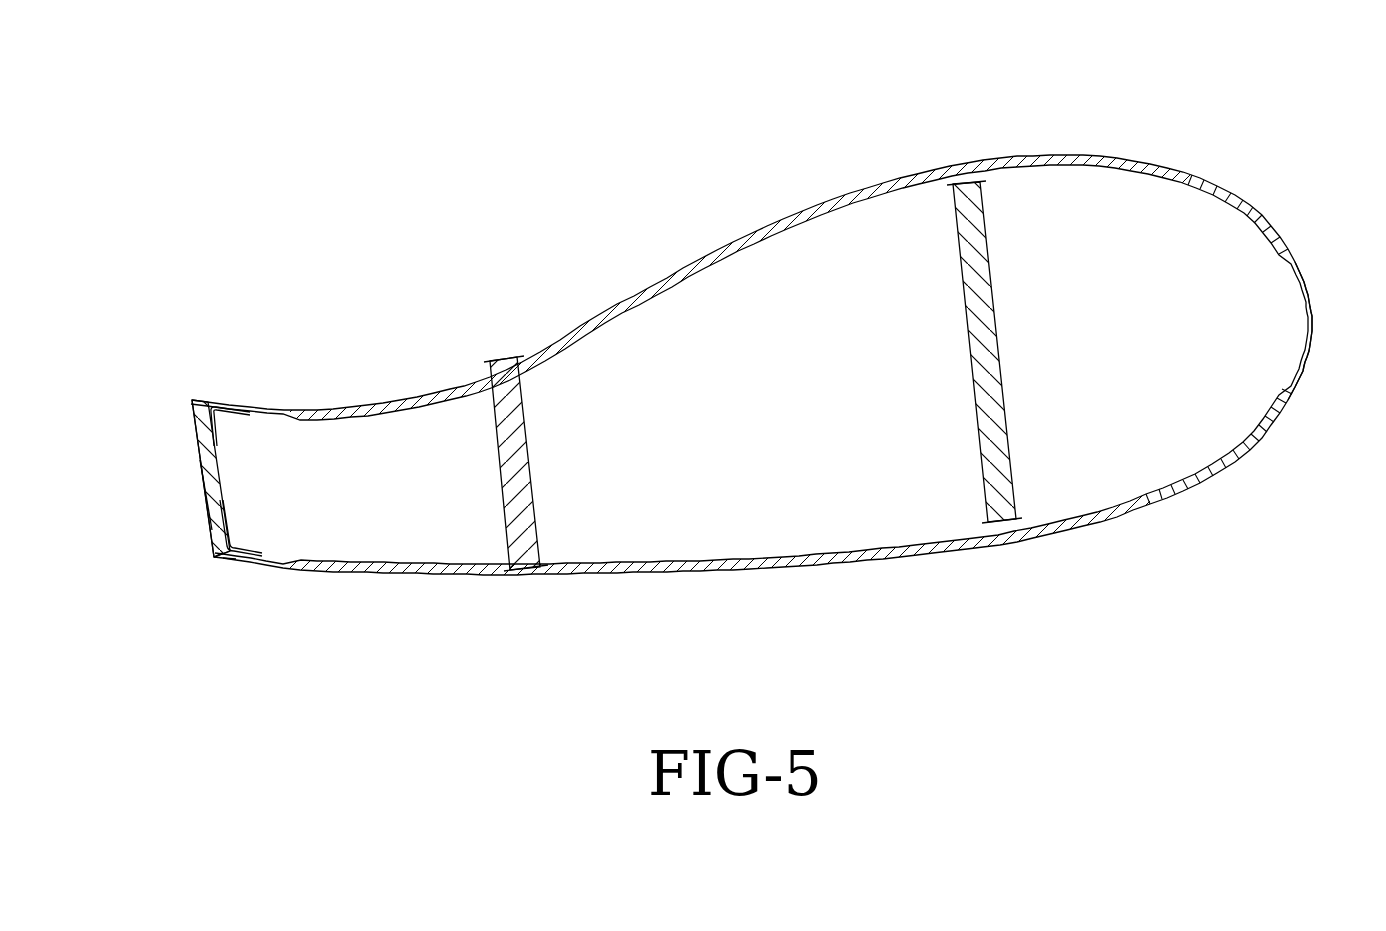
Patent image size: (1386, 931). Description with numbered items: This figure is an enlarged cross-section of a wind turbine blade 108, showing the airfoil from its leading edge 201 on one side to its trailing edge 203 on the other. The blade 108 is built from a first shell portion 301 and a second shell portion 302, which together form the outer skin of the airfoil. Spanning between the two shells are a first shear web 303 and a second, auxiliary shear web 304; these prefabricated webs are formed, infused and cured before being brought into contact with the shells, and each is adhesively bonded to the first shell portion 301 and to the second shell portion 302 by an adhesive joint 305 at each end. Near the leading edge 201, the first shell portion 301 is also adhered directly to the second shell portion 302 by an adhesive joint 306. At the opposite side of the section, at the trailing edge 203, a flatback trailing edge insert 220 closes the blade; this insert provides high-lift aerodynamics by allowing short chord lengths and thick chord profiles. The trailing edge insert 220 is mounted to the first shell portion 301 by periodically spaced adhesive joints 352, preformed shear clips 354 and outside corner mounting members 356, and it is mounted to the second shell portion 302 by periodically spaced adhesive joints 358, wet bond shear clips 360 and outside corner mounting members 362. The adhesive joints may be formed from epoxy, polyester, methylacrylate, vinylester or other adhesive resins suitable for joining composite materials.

The turbine blade 108 is at (539, 218).
The leading edge 201 is at (1311, 358).
The trailing edge 203 is at (212, 527).
The trailing edge insert 220 is at (218, 573).
The first shell portion 301 is at (745, 232).
The second shell portion 302 is at (826, 566).
The first shear web 303 is at (988, 372).
The second shear web 304 is at (520, 480).
The adhesive joint 305 is at (960, 184).
The adhesive joint 306 is at (1310, 318).
The adhesive joints 352 is at (206, 405).
The preformed shear clips 354 is at (232, 417).
The outside corner mounting members 356 is at (193, 402).
The adhesive joints 358 is at (229, 560).
The wet bond shear clips 360 is at (242, 549).
The outside corner mounting members 362 is at (214, 557).